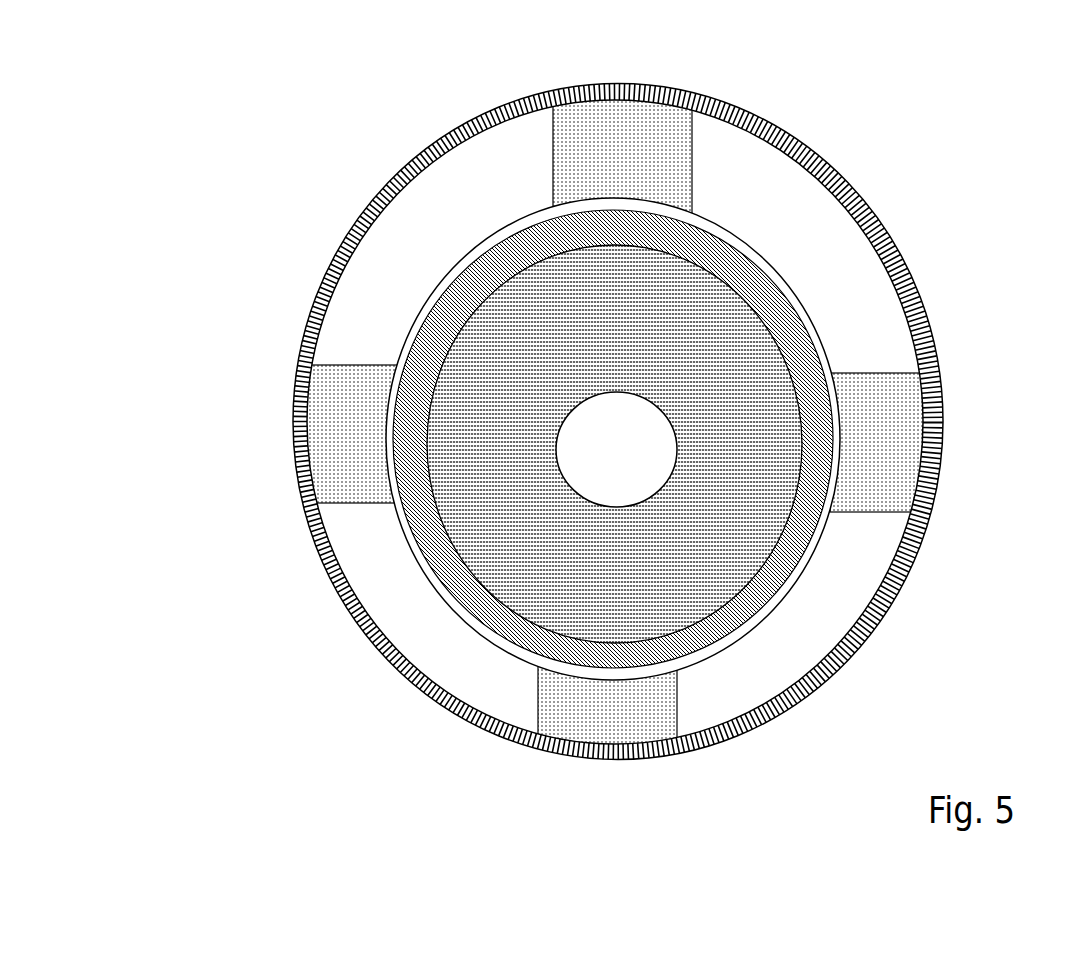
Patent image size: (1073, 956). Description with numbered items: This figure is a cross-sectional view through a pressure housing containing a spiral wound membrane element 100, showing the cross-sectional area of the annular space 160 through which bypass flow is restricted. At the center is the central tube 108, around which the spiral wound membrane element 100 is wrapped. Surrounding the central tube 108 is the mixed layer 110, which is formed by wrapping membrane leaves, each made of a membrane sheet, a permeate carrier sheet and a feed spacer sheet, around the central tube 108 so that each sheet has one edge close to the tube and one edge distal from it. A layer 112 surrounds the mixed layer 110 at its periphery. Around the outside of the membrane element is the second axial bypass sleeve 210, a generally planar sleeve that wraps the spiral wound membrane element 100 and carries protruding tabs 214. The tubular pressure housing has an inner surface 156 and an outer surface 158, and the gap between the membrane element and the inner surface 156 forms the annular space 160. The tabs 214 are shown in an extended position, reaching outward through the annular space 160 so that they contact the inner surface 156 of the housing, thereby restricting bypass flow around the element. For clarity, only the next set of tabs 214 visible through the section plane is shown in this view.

The spiral wound membrane element 100 is at (623, 406).
The central tube 108 is at (616, 449).
The mixed layer 110 is at (772, 428).
The insulating layer 112 is at (797, 320).
The inner surface 156 is at (335, 283).
The outer surface 158 is at (387, 175).
The annular space 160 is at (455, 247).
The second axial bypass sleeve 210 is at (750, 240).
The tabs 214 is at (665, 135).